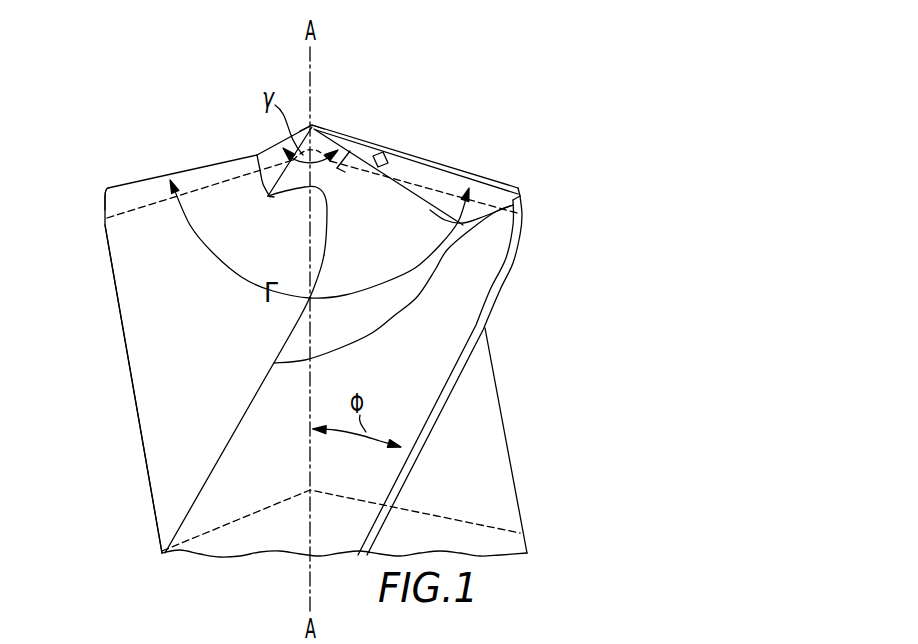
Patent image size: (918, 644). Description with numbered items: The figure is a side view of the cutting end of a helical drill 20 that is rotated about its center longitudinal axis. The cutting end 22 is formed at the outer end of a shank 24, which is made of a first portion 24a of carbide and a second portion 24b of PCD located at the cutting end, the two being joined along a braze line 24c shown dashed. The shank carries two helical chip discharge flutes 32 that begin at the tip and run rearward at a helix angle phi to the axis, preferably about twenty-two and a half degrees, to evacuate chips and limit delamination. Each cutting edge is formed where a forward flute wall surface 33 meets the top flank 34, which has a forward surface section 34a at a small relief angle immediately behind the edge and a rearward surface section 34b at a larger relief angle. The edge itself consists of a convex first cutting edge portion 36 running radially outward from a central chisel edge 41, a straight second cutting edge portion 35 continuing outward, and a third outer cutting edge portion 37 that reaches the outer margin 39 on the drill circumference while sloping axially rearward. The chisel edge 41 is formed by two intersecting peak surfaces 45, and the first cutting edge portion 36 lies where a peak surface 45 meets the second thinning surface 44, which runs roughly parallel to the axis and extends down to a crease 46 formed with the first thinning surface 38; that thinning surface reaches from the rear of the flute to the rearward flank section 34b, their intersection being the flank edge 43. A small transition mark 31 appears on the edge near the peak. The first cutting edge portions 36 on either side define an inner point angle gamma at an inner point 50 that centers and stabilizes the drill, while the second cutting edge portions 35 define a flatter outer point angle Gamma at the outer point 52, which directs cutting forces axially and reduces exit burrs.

The helical drill 20 is at (584, 91).
The cutting end 22 is at (336, 53).
The shank 24 is at (422, 372).
The first portion of the shank 24a is at (152, 266).
The second portion of the shank 24b is at (153, 195).
The braze line 24c is at (500, 530).
The transition point 31 is at (382, 158).
The chip discharge flute 32 is at (150, 406).
The forward flute wall surface 33 is at (143, 297).
The top flank 34 is at (513, 177).
The forward surface section of top flank 34a is at (485, 172).
The rearward surface section of top flank 34b is at (497, 197).
The second cutting edge portion 35 is at (133, 182).
The first cutting edge portion 36 is at (257, 156).
The third outer cutting edge portion 37 is at (102, 186).
The first thinning surface 38 is at (323, 266).
The outer margin 39 is at (500, 295).
The chisel edge 41 is at (316, 125).
The flank edge 43 is at (437, 207).
The second thinning surface 44 is at (267, 170).
The peak surface 45 is at (338, 168).
The crease 46 is at (270, 198).
The inner point 50 is at (292, 91).
The outer point 52 is at (198, 134).